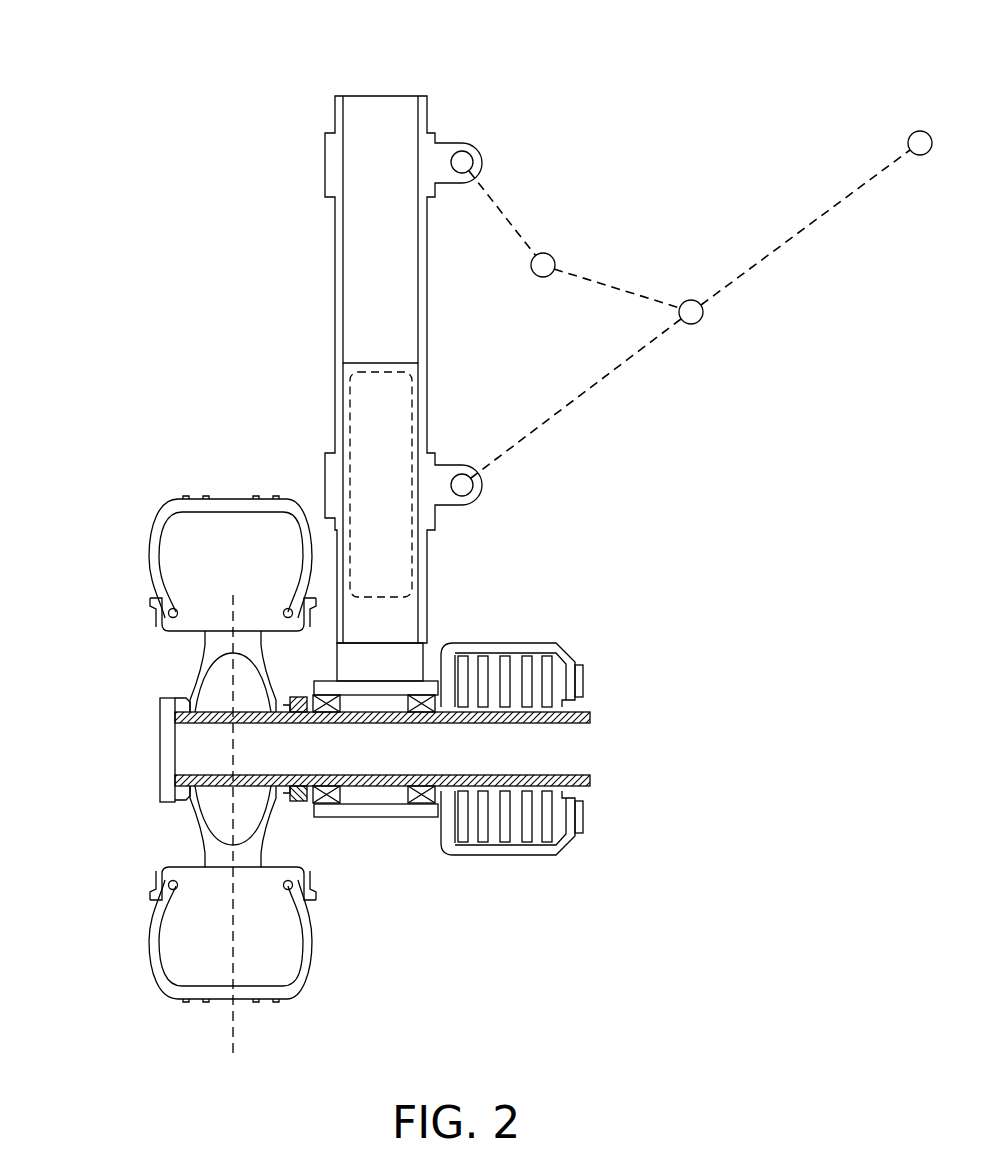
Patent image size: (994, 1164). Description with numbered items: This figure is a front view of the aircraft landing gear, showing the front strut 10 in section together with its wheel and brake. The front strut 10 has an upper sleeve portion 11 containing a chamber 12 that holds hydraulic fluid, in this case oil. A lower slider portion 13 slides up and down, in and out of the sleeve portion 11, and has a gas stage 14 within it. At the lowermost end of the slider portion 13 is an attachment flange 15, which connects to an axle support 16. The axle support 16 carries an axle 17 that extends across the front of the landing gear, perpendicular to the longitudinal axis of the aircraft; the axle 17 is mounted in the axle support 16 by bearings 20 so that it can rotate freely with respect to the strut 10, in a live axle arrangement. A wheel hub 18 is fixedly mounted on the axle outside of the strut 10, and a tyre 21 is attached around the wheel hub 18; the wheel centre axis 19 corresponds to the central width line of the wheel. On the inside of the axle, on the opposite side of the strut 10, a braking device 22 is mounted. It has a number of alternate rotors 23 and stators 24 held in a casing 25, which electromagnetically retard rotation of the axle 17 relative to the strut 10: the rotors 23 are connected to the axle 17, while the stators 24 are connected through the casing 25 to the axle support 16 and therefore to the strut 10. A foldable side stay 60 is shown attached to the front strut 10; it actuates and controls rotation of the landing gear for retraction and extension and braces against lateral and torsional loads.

The front strut 10 is at (262, 290).
The upper sleeve portion 11 is at (335, 163).
The chamber 12 is at (383, 118).
The lower slider portion 13 is at (355, 628).
The gas stage 14 is at (390, 555).
The attachment flange 15 is at (410, 660).
The axle support 16 is at (350, 817).
The axle 17 is at (182, 764).
The wheel hub 18 is at (162, 627).
The wheel centre axis 19 is at (232, 952).
The bearings 20 is at (420, 805).
The tyre 21 is at (175, 508).
The braking device 22 is at (563, 606).
The rotors 23 is at (543, 712).
The stators 24 is at (553, 842).
The casing 25 is at (560, 645).
The foldable side stay 60 is at (773, 270).